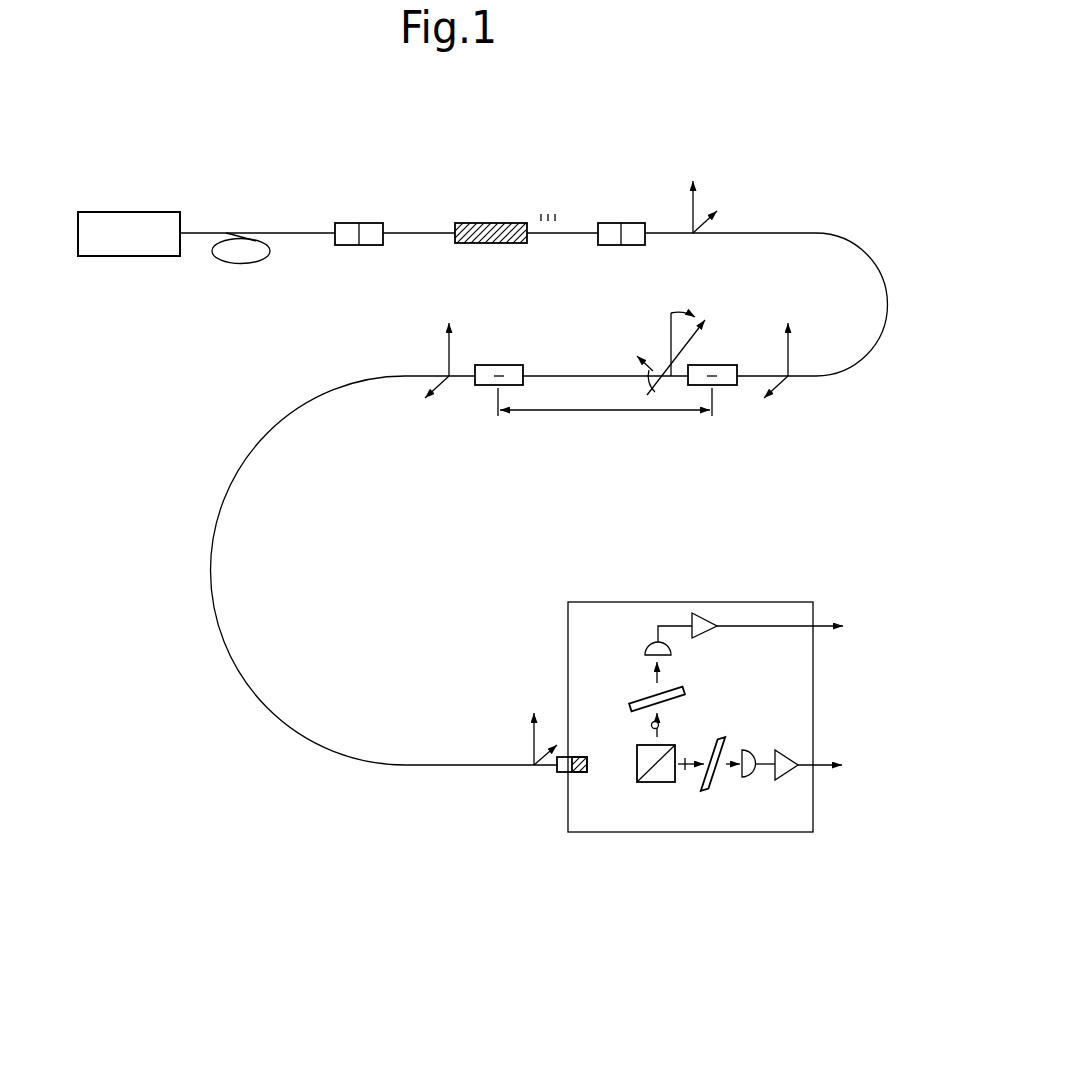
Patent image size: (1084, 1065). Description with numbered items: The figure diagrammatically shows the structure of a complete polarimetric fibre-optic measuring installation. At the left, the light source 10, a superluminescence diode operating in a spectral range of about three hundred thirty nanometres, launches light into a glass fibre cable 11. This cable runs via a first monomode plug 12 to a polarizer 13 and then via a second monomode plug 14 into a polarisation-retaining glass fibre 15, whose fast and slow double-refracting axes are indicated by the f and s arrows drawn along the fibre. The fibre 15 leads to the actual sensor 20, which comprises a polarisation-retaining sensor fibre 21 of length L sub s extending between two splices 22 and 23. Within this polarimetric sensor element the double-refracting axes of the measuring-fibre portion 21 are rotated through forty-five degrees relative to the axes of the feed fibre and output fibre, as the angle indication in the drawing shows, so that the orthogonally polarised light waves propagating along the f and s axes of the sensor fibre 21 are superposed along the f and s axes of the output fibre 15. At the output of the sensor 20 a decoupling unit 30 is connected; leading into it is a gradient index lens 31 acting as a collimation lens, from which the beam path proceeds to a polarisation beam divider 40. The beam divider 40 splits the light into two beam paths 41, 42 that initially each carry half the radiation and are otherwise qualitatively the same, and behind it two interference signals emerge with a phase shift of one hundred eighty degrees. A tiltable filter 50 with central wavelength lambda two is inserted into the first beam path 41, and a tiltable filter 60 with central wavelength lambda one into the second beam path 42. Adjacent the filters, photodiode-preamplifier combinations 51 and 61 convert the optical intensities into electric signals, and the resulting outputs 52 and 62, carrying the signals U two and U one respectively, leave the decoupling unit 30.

The light source 10 is at (158, 211).
The glass fibre cable 11 is at (257, 234).
The monomode plug 12 is at (368, 223).
The polarizer 13 is at (488, 223).
The second monomode plug 14 is at (620, 223).
The polarisation-retaining glass fibre 15 is at (812, 232).
The sensor 20 is at (562, 446).
The sensor fibre 21 is at (553, 373).
The splice 22 is at (728, 386).
The splice 23 is at (485, 386).
The decoupling unit 30 is at (598, 601).
The gradient index lens 31 is at (580, 773).
The beam divider 40 is at (658, 783).
The beam path 41 is at (651, 722).
The beam path 42 is at (678, 767).
The tiltable filter 50 is at (703, 675).
The photodiode-preamplifier combination 51 is at (694, 612).
The output signal U2 52 is at (835, 616).
The tiltable filter 60 is at (738, 790).
The photodiode-preamplifier combination 61 is at (783, 777).
The output signal U1 62 is at (877, 756).